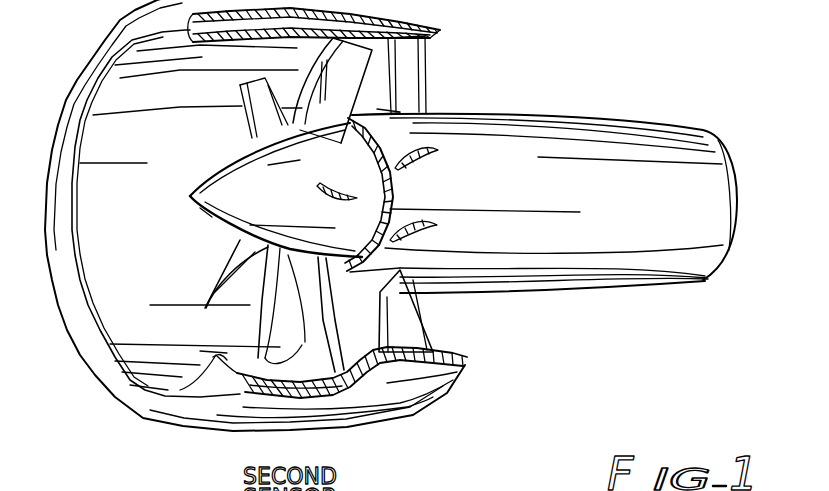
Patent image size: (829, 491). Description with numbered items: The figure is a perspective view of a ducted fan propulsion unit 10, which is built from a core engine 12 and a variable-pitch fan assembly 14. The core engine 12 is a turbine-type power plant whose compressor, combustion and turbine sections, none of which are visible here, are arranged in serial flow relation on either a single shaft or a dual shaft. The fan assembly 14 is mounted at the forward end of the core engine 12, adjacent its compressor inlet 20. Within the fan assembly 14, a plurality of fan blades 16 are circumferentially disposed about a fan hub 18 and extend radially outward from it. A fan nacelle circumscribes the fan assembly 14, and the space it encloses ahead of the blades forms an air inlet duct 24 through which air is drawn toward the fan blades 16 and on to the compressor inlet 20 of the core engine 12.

The ducted fan propulsion unit 10 is at (494, 46).
The core engine 12 is at (675, 133).
The variable-pitch fan assembly 14 is at (201, 208).
The fan blades 16 is at (283, 363).
The fan hub 18 is at (210, 174).
The compressor inlet 20 is at (388, 133).
The air inlet duct 24 is at (210, 333).